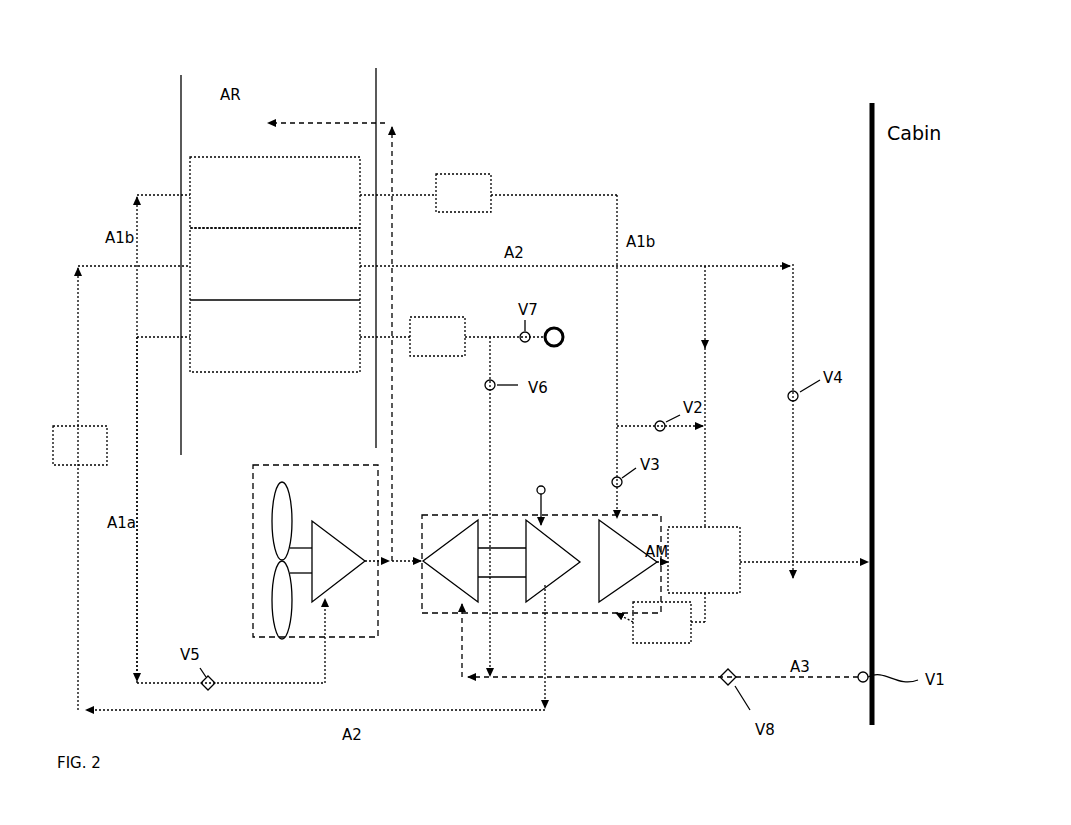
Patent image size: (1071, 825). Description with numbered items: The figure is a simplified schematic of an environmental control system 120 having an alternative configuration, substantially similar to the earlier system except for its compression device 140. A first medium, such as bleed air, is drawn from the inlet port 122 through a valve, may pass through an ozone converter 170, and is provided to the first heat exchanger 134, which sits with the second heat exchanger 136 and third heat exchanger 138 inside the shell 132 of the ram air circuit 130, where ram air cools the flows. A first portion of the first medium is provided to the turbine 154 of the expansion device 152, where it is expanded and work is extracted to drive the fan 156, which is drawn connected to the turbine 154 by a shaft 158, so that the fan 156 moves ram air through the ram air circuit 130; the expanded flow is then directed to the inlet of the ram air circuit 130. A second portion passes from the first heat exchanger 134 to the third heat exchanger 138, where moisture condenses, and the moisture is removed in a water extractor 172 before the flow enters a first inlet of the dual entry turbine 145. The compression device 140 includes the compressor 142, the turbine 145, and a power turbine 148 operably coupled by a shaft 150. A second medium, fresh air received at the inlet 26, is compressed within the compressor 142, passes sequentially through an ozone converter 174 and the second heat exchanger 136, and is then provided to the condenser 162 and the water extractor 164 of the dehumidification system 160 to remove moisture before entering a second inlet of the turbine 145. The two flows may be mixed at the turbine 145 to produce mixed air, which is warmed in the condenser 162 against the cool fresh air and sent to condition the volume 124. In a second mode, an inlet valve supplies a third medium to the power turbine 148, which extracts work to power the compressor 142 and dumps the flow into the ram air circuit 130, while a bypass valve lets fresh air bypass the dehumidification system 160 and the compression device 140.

The system 120 is at (98, 103).
The ram air circuit 130 is at (273, 70).
The shell 132 is at (376, 105).
The first heat exchanger 134 is at (275, 336).
The second heat exchanger 136 is at (275, 264).
The third heat exchanger 138 is at (275, 192).
The inlet port 122 is at (557, 328).
The volume 124 is at (834, 567).
The compression device 140 is at (535, 557).
The compressor 142 is at (545, 578).
The turbine 145 is at (610, 540).
The power turbine 148 is at (456, 582).
The shaft 150 is at (508, 578).
The expansion device 152 is at (273, 552).
The turbine 154 is at (330, 572).
The fan 156 is at (280, 513).
The fan shaft 158 is at (300, 547).
The dehumidification system 160 is at (727, 549).
The condenser 162 is at (728, 586).
The water extractor 164 is at (690, 638).
The ozone converter 170 is at (427, 356).
The water extractor 172 is at (475, 178).
The ozone converter 174 is at (70, 460).
The inlet 26 is at (538, 486).